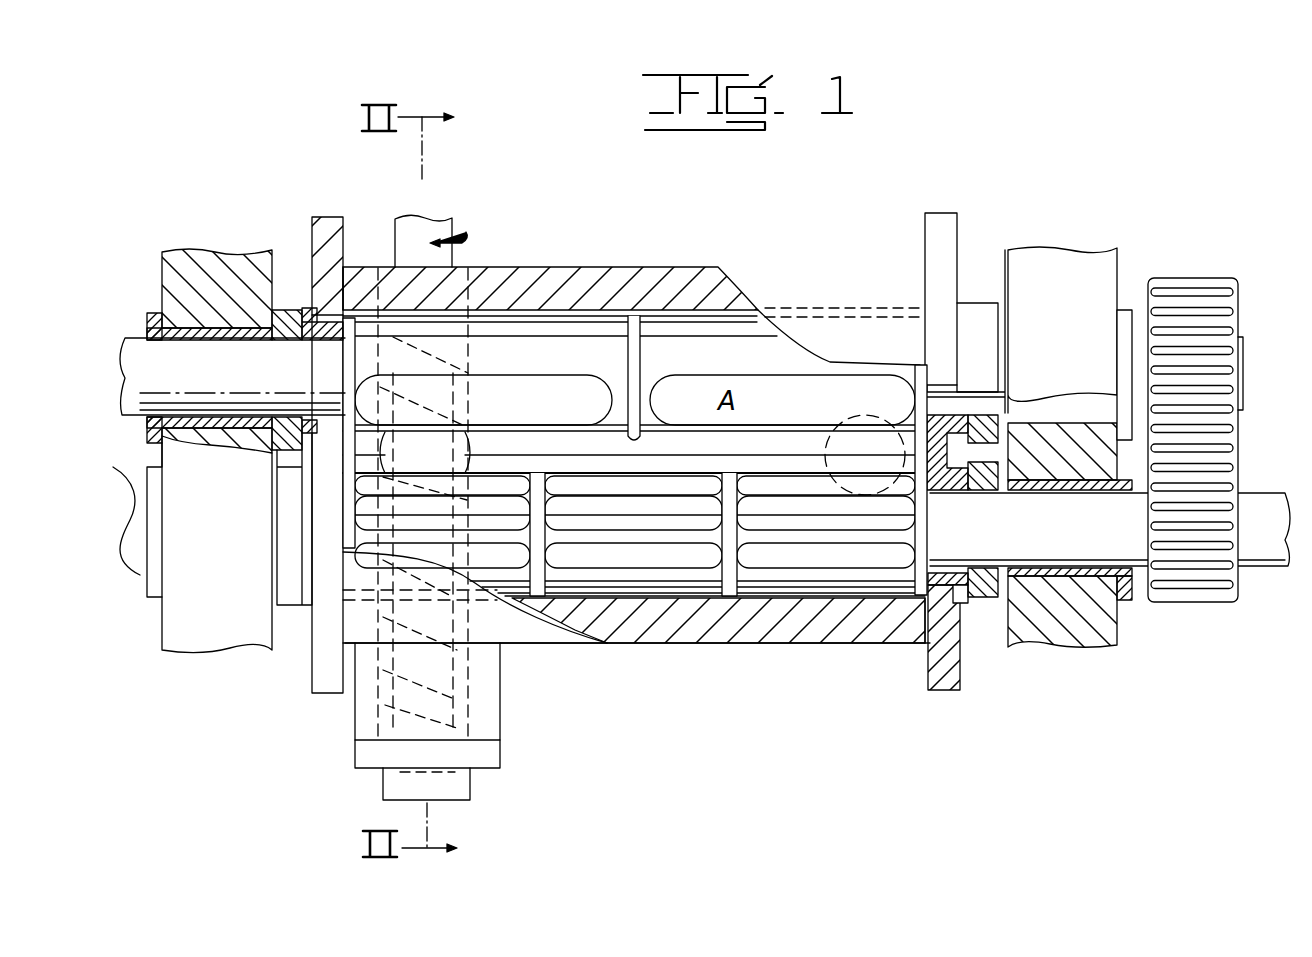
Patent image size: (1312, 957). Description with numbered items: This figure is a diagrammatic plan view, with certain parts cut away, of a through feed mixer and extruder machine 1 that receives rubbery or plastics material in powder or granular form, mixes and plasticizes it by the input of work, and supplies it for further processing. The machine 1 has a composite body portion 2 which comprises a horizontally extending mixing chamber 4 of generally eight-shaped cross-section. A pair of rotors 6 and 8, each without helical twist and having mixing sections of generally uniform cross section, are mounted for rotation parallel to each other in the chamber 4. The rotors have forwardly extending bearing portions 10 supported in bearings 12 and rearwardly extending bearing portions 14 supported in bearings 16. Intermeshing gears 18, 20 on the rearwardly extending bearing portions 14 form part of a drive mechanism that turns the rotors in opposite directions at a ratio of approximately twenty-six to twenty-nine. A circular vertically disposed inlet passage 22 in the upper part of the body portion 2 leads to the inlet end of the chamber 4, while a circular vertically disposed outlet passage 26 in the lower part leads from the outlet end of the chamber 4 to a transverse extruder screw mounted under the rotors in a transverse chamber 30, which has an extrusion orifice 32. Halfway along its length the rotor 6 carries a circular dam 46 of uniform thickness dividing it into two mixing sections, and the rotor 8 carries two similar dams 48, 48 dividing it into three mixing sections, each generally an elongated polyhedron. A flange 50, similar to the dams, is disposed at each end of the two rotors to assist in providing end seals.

The through feed mixer and extruder machine 1 is at (684, 736).
The composite body portion 2 is at (815, 625).
The mixing chamber 4 is at (772, 442).
The rotor 6 is at (723, 345).
The rotor 8 is at (668, 582).
The forwardly extending bearing portions 10 is at (133, 420).
The bearings 12 is at (153, 318).
The rearwardly extending bearing portions 14 is at (1139, 343).
The bearings 16 is at (1120, 322).
The intermeshing gear 18 is at (1222, 335).
The intermeshing gear 20 is at (1228, 518).
The inlet passage 22 is at (866, 470).
The outlet passage 26 is at (465, 440).
The transverse chamber 30 is at (362, 700).
The extrusion orifice 32 is at (437, 802).
The circular dam 46 is at (628, 337).
The dams 48 is at (540, 596).
The flange 50 is at (345, 382).